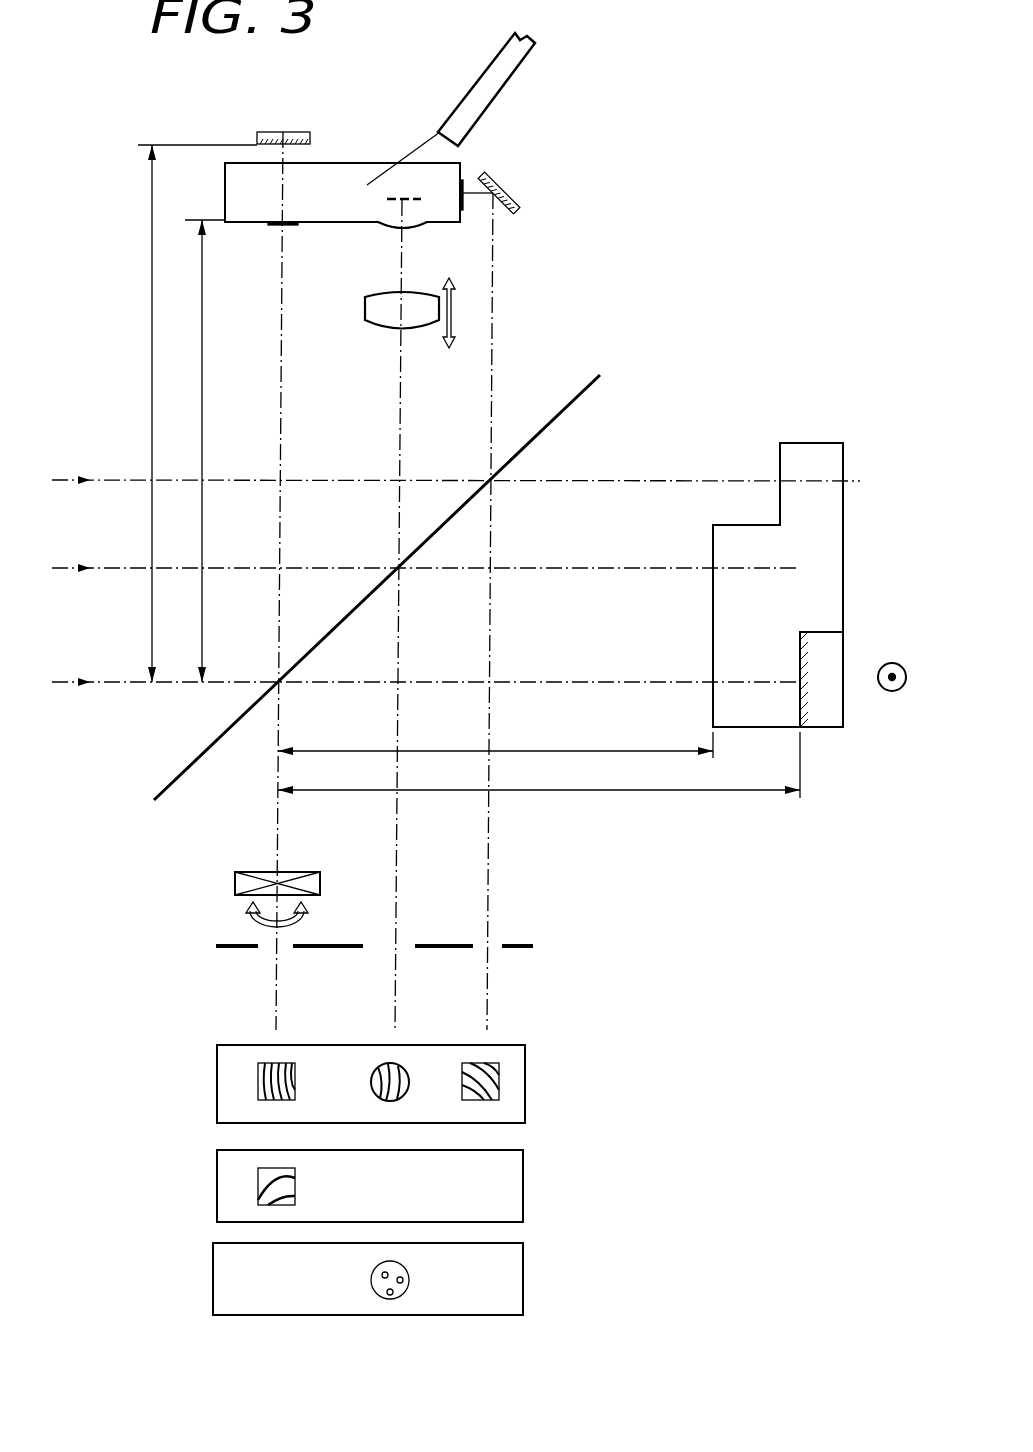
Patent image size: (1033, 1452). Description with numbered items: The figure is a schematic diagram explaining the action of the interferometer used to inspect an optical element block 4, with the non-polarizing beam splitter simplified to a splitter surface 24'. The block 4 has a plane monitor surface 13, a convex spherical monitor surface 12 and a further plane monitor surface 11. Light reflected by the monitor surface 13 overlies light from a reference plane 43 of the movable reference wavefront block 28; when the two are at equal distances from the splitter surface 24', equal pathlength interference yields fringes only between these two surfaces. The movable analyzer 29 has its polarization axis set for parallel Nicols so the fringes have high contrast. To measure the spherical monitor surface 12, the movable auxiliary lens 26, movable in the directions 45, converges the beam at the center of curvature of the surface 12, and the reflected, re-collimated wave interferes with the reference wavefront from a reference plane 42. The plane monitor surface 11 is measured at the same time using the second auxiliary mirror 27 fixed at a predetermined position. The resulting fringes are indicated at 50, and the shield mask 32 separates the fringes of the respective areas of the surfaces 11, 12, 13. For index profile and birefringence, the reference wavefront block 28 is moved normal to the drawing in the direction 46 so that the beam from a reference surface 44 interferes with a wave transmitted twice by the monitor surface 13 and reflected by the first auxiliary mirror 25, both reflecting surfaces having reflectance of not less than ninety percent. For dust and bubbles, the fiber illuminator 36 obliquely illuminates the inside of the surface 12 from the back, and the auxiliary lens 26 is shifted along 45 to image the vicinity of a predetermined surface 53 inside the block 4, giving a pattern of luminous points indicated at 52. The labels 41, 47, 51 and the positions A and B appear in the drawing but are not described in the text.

The optical element block 4 is at (348, 163).
The monitor surface 11 is at (423, 210).
The monitor surface 12 is at (412, 230).
The monitor surface 13 is at (268, 227).
The splitter surface 24' is at (397, 556).
The first auxiliary mirror 25 is at (300, 131).
The movable auxiliary lens 26 is at (380, 328).
The second auxiliary mirror 27 is at (522, 200).
The movable reference wavefront block 28 is at (828, 443).
The movable analyzer 29 is at (235, 880).
The shield mask 32 is at (518, 943).
The fiber illuminator 36 is at (513, 80).
The first step surface 41 is at (778, 458).
The reference plane 42 is at (712, 545).
The reference plane 43 is at (712, 665).
The reference surface 44 is at (807, 697).
The directions of movement 45 is at (453, 307).
The direction of movement 46 is at (890, 661).
The rotation direction arrow 47 is at (248, 922).
The interference fringes 50 is at (217, 1092).
The second pattern row 51 is at (217, 1188).
The pattern 52 is at (213, 1278).
The predetermined surface 53 is at (407, 194).
The point A is at (332, 225).
The point B is at (462, 217).